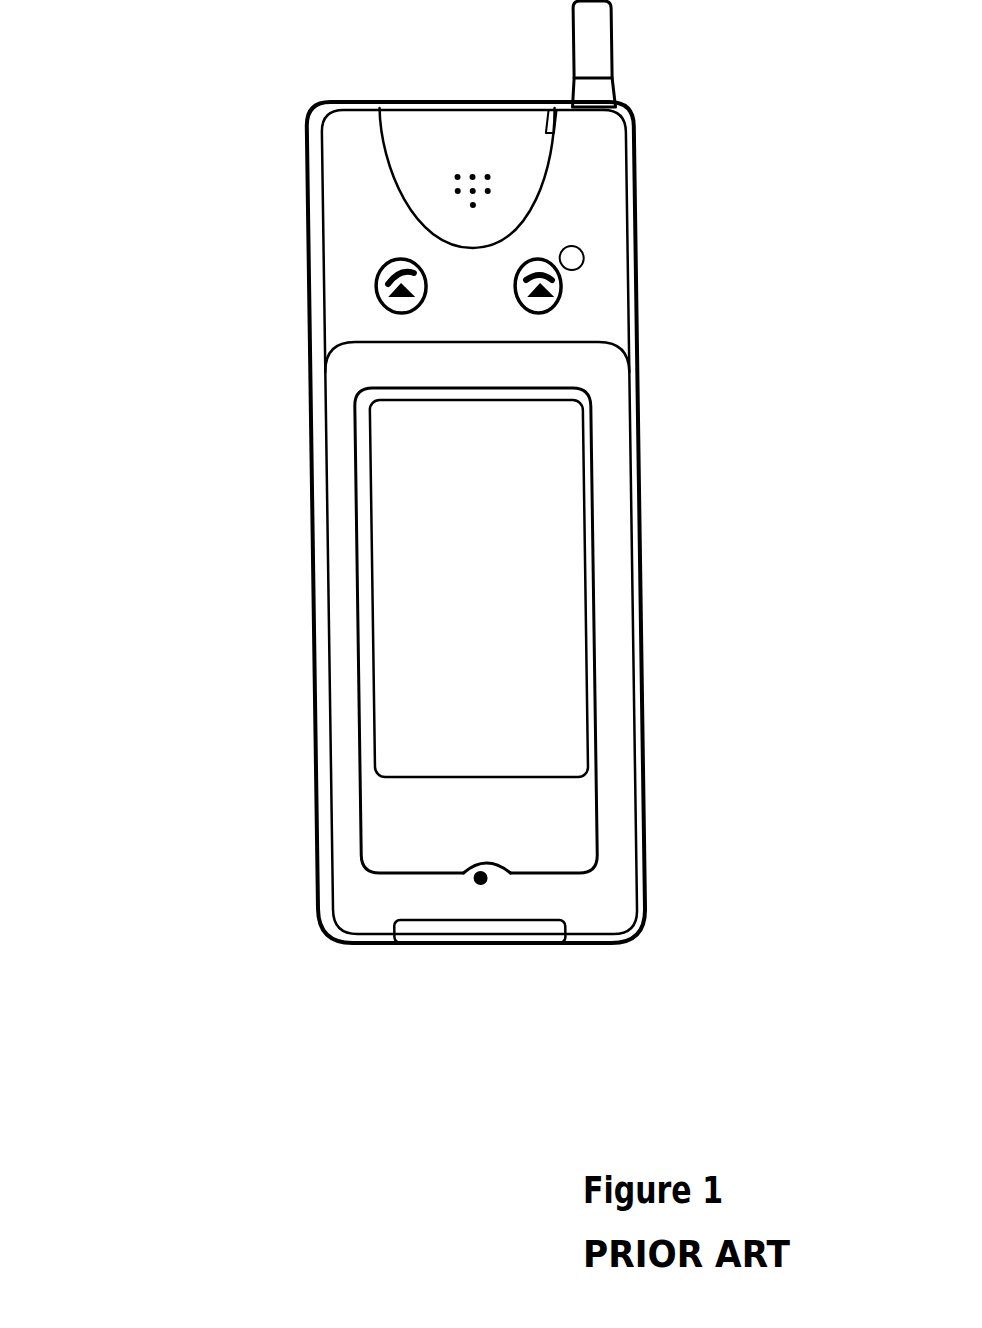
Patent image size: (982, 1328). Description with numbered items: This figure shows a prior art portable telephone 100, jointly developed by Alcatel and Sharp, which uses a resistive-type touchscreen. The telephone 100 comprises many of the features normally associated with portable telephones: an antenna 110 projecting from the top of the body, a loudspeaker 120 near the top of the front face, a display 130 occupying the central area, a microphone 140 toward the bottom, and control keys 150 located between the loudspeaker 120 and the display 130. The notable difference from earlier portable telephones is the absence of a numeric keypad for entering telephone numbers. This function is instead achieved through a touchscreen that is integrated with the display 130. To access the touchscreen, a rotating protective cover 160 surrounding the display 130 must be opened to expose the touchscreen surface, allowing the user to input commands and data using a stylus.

The telephone 100 is at (213, 119).
The antenna 110 is at (634, 45).
The loudspeaker 120 is at (514, 182).
The display 130 is at (436, 480).
The microphone 140 is at (455, 870).
The control keys 150 is at (494, 263).
The rotating protective cover 160 is at (613, 417).